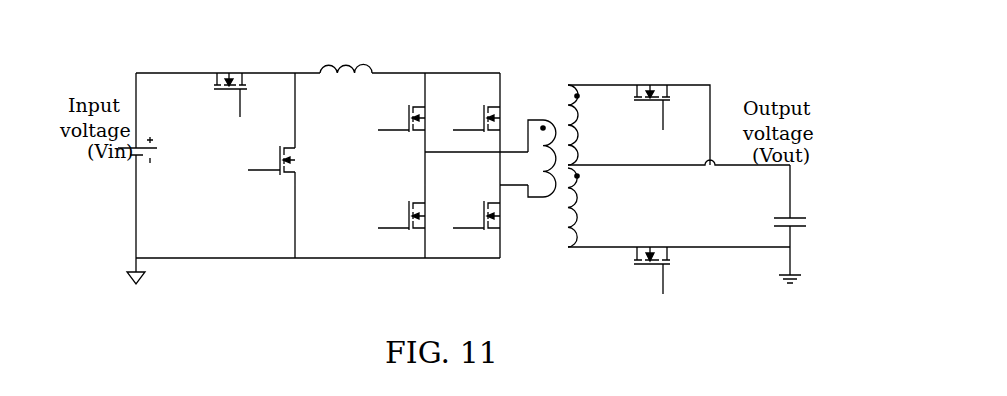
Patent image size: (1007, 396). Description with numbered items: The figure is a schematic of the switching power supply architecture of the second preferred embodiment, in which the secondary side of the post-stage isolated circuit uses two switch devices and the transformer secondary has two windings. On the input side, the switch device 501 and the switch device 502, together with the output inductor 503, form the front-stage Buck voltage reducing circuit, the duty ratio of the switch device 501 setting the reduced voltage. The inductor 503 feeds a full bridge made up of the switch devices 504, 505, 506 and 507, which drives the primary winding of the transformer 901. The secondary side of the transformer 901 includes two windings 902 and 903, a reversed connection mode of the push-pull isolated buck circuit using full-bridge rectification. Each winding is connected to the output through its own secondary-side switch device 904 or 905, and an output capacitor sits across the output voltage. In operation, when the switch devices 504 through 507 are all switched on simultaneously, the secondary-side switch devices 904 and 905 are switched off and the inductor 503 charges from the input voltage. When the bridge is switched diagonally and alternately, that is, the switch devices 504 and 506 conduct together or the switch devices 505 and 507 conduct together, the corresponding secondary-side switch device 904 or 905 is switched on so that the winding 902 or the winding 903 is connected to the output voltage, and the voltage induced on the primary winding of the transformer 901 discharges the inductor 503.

The switch device 501 is at (222, 77).
The switch device 502 is at (271, 176).
The inductor 503 is at (346, 55).
The switch device 504 is at (395, 117).
The switch device 505 is at (396, 211).
The switch device 506 is at (470, 212).
The switch device 507 is at (466, 117).
The transformer 901 is at (549, 200).
The winding 902 is at (594, 125).
The winding 903 is at (595, 207).
The secondary-side switch device 904 is at (655, 87).
The secondary-side switch device 905 is at (657, 252).